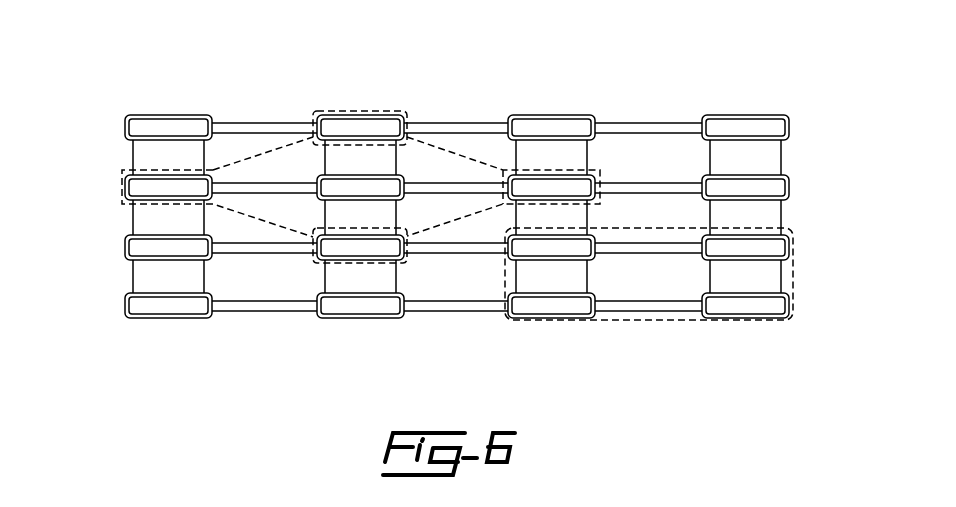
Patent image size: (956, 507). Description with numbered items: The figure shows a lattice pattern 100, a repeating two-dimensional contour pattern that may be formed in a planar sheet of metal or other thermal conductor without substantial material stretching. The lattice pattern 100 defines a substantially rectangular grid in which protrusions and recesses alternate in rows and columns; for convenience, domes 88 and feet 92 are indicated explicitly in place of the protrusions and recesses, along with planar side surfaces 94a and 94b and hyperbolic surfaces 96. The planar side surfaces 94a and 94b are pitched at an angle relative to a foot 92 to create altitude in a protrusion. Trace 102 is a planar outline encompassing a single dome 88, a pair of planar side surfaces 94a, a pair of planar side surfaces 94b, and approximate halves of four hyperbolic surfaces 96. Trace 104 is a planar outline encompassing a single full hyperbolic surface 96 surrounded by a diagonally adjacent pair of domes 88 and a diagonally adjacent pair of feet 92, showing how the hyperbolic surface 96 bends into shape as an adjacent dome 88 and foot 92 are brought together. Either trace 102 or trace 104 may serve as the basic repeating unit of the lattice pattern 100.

The lattice pattern 100 is at (82, 108).
The trace 102 is at (122, 192).
The trace 104 is at (768, 322).
The dome 88 is at (372, 188).
The foot 92 is at (343, 125).
The planar side surface 94a is at (240, 187).
The planar side surface 94b is at (362, 163).
The hyperbolic surface 96 is at (292, 162).